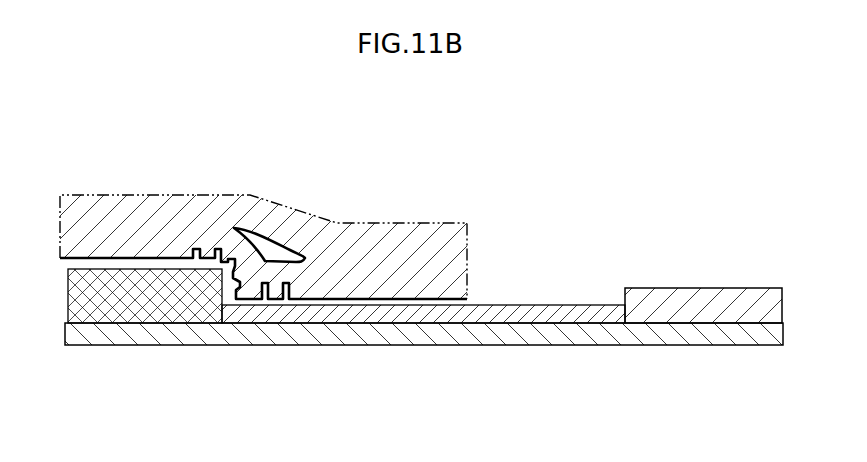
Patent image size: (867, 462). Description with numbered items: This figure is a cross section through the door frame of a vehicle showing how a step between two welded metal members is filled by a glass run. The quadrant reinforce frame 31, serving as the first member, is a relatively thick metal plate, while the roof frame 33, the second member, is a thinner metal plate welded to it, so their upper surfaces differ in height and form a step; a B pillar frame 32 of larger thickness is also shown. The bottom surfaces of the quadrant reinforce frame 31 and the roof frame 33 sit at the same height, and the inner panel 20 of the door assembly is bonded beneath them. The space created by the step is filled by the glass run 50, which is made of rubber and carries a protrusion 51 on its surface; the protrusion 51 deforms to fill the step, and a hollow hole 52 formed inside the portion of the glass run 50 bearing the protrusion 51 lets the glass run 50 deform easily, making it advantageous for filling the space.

The inner panel 20 is at (415, 341).
The quadrant reinforce frame 31 is at (113, 280).
The B pillar frame 32 is at (717, 301).
The roof frame 33 is at (553, 311).
The glass run 50 is at (170, 218).
The protrusion 51 is at (253, 301).
The hollow hole 52 is at (275, 250).